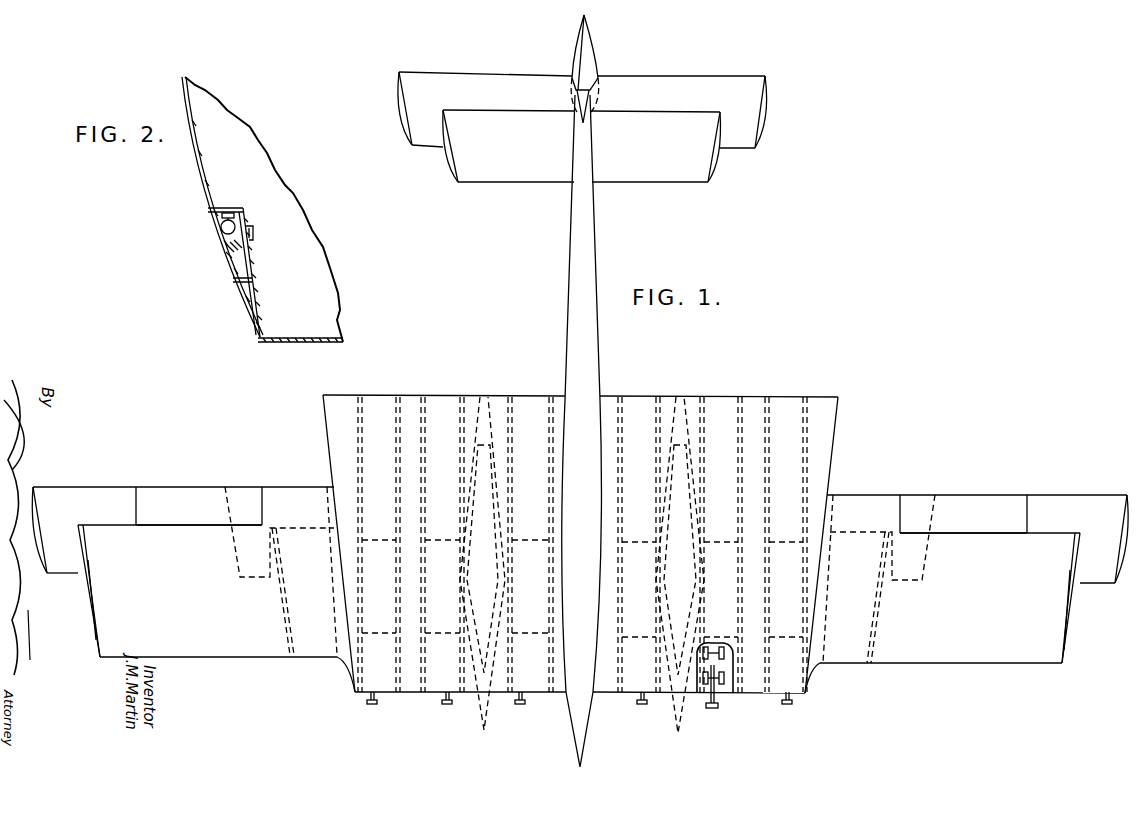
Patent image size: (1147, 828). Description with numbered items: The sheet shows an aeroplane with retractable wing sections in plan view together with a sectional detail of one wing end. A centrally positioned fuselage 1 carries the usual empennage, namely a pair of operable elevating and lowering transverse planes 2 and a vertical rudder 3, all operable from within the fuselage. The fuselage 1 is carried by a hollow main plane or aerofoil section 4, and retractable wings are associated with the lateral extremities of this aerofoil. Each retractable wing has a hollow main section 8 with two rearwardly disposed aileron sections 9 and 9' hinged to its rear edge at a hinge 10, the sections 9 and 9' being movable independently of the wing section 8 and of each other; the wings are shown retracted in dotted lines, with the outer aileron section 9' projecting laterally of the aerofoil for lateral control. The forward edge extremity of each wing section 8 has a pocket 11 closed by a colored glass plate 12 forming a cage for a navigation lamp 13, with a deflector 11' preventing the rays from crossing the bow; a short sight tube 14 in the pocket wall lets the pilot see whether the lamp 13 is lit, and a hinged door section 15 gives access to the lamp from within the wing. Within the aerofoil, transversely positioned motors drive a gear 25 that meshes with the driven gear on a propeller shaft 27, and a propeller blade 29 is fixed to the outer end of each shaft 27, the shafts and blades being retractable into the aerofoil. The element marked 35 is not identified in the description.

In FIG. 1, the fuselage 1 is at (582, 431).
In FIG. 1, the transverse planes 2 is at (582, 127).
In FIG. 1, the vertical rudder 3 is at (588, 50).
In FIG. 1, the main plane 4 is at (621, 400).
In FIG. 1, the main wing section 8 is at (579, 609).
In FIG. 1, the aileron section 9 is at (581, 510).
In FIG. 1, the outer aileron section 9' is at (580, 535).
In FIG. 1, the hinge 10 is at (181, 526).
In FIG. 2, the pocket 11 is at (262, 209).
In FIG. 2, the deflector 11' is at (223, 295).
In FIG. 2, the colored glass plate 12 is at (216, 262).
In FIG. 1, the lamp 13 is at (93, 610).
In FIG. 2, the lamp 13 is at (220, 227).
In FIG. 2, the sight tube 14 is at (254, 228).
In FIG. 2, the hinged door section 15 is at (243, 216).
In FIG. 1, the gear 25 is at (724, 659).
In FIG. 1, the propeller shaft 27 is at (710, 706).
In FIG. 1, the propeller blade 29 is at (445, 704).
In FIG. 1, the floats 35 is at (486, 724).